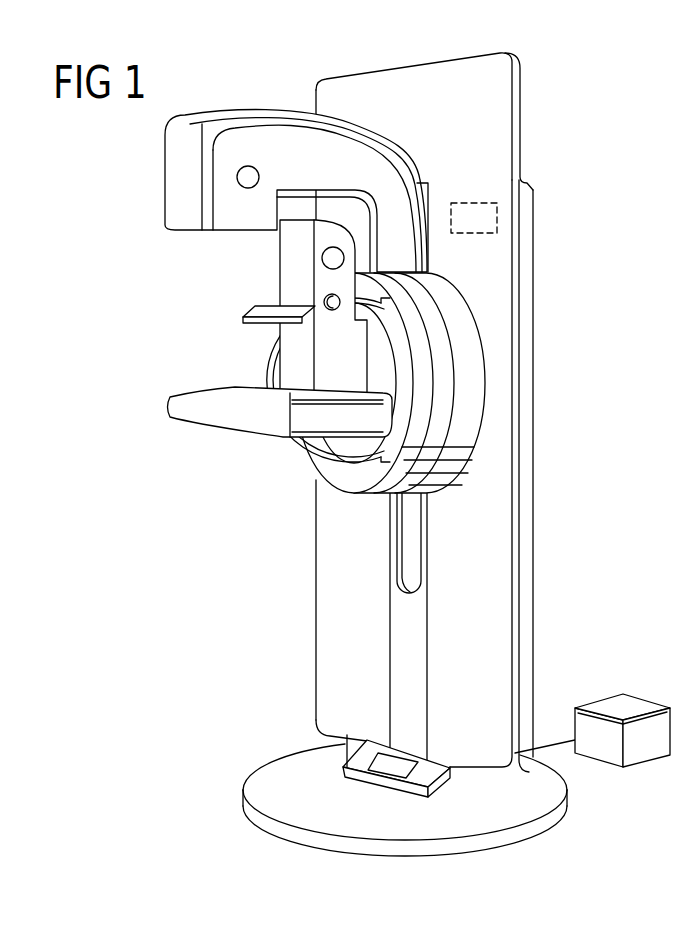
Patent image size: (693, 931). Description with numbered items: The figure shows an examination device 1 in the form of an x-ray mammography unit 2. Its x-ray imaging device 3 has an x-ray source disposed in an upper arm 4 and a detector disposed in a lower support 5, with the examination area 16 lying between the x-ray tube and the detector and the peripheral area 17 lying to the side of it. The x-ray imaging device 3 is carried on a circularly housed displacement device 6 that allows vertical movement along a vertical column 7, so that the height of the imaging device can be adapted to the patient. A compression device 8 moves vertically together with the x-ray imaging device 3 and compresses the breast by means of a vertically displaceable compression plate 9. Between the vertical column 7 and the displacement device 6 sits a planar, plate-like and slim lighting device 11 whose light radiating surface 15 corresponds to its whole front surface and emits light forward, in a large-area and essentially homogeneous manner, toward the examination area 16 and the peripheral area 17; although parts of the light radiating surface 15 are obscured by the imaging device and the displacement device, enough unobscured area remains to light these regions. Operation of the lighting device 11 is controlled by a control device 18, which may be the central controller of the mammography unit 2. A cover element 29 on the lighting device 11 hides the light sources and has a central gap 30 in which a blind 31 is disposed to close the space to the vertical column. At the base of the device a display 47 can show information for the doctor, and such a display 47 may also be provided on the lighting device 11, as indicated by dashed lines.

The examination device 1 is at (550, 328).
The x-ray mammography unit 2 is at (287, 100).
The x-ray imaging device 3 is at (160, 300).
The upper arm 4 is at (181, 184).
The lower support 5 is at (183, 410).
The displacement device 6 is at (458, 378).
The vertical column 7 is at (528, 479).
The compression device 8 is at (257, 338).
The compression plate 9 is at (275, 313).
The lighting device 11 is at (530, 165).
The light radiating surface 15 is at (338, 604).
The examination area 16 is at (165, 377).
The peripheral area 17 is at (250, 520).
The control device 18 is at (610, 703).
The cover element 29 is at (405, 653).
The central gap 30 is at (412, 556).
The blind 31 is at (408, 520).
The display 47 is at (493, 224).